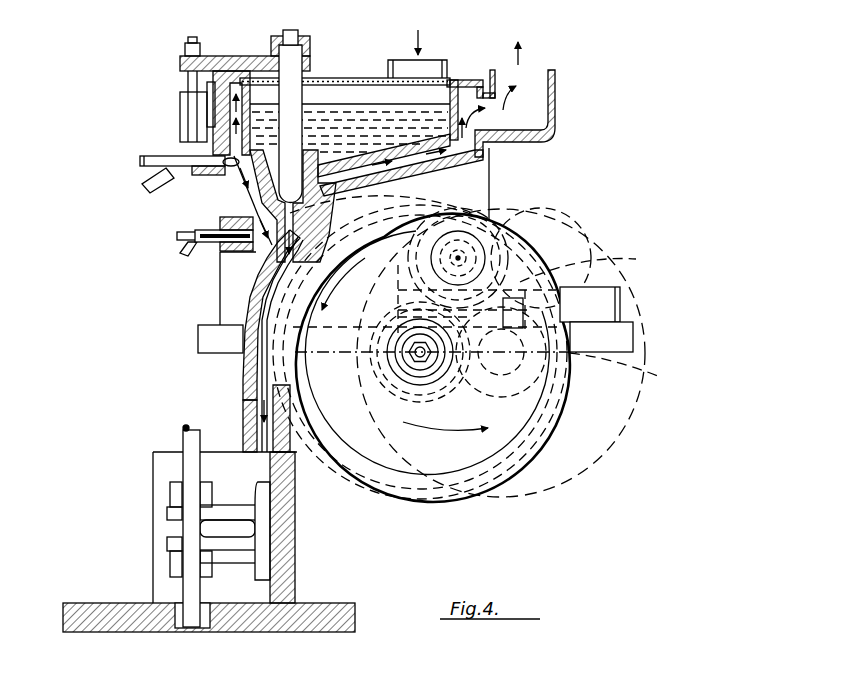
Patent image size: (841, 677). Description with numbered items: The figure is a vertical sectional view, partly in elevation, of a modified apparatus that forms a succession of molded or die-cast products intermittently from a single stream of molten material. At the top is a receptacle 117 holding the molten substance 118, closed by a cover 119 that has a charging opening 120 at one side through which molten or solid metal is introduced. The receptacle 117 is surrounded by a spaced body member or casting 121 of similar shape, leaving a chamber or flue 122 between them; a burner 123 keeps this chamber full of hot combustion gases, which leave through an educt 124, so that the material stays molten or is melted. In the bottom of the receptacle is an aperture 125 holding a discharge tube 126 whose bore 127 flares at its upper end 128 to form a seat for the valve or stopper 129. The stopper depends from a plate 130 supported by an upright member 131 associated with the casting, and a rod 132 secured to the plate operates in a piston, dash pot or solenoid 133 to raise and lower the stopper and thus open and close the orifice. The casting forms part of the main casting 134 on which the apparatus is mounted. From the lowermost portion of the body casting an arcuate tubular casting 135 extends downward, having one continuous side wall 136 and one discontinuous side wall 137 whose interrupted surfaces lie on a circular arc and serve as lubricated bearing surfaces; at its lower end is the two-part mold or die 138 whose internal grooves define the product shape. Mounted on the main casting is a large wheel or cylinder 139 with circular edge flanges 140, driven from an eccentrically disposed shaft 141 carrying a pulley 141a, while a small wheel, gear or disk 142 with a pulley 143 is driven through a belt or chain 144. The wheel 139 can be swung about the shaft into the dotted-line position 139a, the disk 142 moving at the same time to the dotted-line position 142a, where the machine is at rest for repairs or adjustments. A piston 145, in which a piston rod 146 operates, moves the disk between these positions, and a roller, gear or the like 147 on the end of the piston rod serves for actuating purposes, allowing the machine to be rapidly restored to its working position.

The receptacle 117 is at (466, 92).
The molten substance 118 is at (340, 107).
The cover 119 is at (372, 78).
The charging opening 120 is at (430, 66).
The body member or casting 121 is at (452, 154).
The chamber or flue 122 is at (413, 165).
The burner 123 is at (178, 157).
The educt 124 is at (537, 73).
The aperture 125 is at (347, 203).
The discharge tube 126 is at (270, 245).
The bore 127 is at (260, 258).
The flared upper end of the bore 128 is at (240, 218).
The valve or stopper 129 is at (292, 100).
The plate 130 is at (247, 56).
The upright member 131 is at (208, 85).
The rod 132 is at (180, 74).
The piston, dash pot or solenoid 133 is at (180, 108).
The main casting 134 is at (216, 272).
The arcuate tubular casting 135 is at (242, 372).
The continuous side wall 136 is at (243, 393).
The discontinuous side wall 137 is at (290, 444).
The mold or die 138 is at (142, 548).
The wheel or cylinder 139 is at (380, 490).
The dotted line position of wheel 139a is at (641, 403).
The circular edge flanges 140 is at (343, 486).
The eccentrically disposed shaft 141 is at (543, 203).
The pulley 141a is at (560, 214).
The small wheel, gear or disk 142 is at (437, 388).
The dotted line position of disk 142a is at (527, 392).
The pulley 143 is at (418, 385).
The belt or chain 144 is at (630, 259).
The piston 145 is at (608, 306).
The piston rod 146 is at (655, 374).
The roller, gear or the like 147 is at (412, 291).